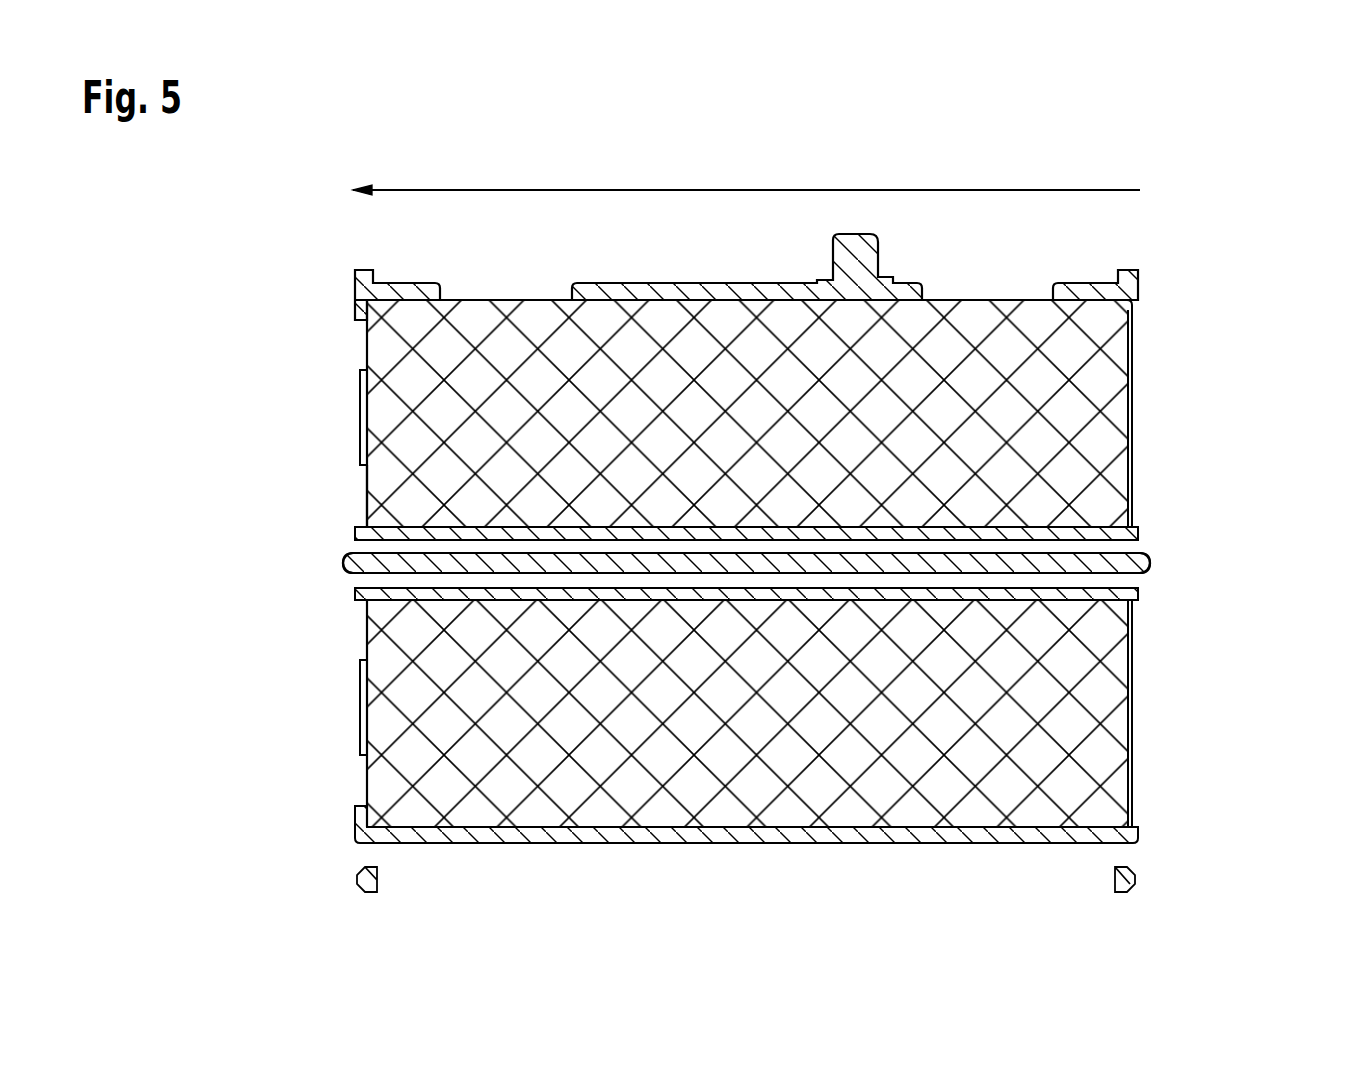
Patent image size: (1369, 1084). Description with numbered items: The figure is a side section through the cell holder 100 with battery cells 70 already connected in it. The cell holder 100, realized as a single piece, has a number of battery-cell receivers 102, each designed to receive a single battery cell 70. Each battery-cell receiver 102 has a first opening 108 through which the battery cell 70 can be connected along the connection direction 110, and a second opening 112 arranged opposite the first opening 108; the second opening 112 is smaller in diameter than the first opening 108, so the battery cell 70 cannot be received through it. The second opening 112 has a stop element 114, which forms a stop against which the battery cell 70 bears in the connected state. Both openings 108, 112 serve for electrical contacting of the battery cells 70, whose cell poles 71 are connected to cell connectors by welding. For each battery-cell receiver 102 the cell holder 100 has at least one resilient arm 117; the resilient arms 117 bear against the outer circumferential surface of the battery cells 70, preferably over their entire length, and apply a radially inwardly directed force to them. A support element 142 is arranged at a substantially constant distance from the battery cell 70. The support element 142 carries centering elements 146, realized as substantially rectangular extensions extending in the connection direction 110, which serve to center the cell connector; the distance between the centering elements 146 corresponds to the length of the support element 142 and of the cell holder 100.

The connection direction 110 is at (931, 190).
The battery-cell receiver 102 is at (303, 349).
The battery cell 70 is at (485, 355).
The cell holder 100 is at (1097, 293).
The stop element 114 is at (352, 306).
The cell pole 71 is at (362, 405).
The second opening 112 is at (303, 455).
The first opening 108 is at (1205, 457).
The resilient arm 117 is at (1033, 532).
The support element 142 is at (750, 565).
The centering element 146 is at (350, 563).